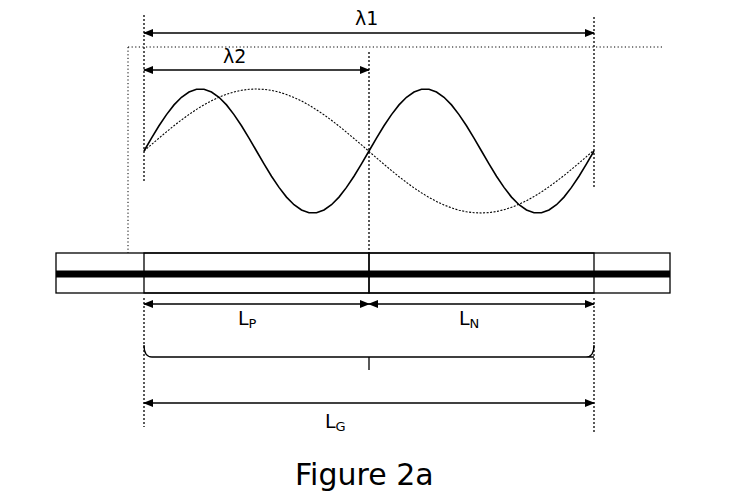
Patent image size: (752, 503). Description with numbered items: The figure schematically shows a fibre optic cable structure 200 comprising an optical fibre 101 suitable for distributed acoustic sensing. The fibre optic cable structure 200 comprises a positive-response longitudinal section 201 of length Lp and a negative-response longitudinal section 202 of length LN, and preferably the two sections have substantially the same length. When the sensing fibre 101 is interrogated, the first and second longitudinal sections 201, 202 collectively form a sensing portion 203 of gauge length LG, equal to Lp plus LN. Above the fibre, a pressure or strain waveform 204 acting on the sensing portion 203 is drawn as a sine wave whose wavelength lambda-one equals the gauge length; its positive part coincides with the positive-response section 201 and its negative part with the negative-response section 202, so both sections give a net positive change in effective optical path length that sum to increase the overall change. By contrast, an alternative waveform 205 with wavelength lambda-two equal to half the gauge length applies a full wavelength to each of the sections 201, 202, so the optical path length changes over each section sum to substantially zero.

The fibre optic cable structure 200 is at (358, 236).
The optical fibre 101 is at (351, 317).
The positive-response longitudinal section 201 is at (256, 245).
The negative-response longitudinal section 202 is at (481, 249).
The sensing portion 203 is at (369, 369).
The pressure or strain waveform 204 is at (369, 151).
The alternative waveform 205 is at (369, 150).